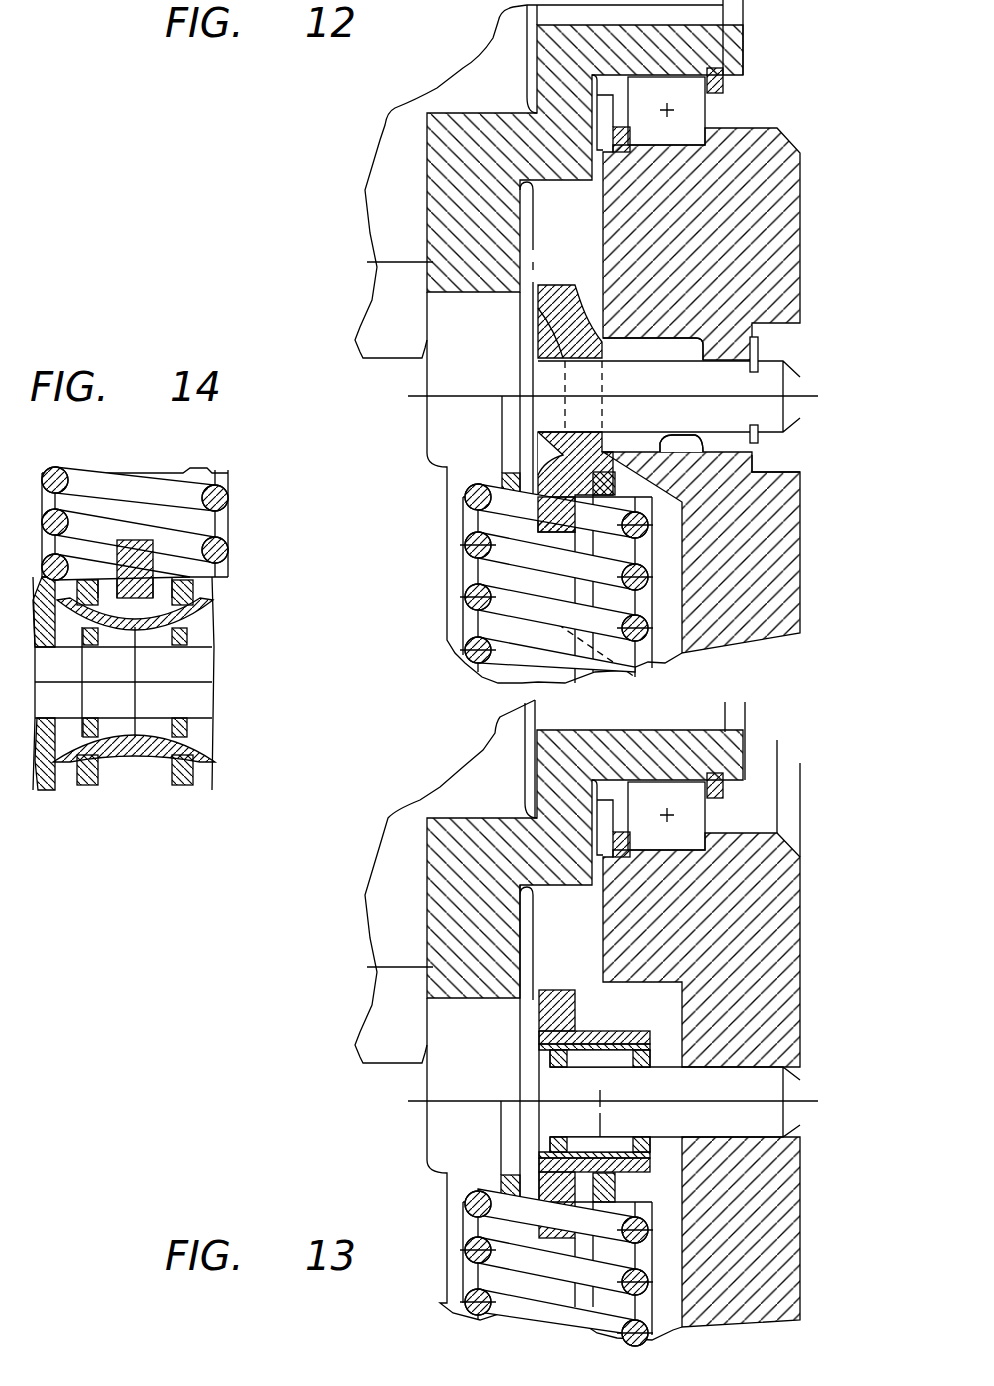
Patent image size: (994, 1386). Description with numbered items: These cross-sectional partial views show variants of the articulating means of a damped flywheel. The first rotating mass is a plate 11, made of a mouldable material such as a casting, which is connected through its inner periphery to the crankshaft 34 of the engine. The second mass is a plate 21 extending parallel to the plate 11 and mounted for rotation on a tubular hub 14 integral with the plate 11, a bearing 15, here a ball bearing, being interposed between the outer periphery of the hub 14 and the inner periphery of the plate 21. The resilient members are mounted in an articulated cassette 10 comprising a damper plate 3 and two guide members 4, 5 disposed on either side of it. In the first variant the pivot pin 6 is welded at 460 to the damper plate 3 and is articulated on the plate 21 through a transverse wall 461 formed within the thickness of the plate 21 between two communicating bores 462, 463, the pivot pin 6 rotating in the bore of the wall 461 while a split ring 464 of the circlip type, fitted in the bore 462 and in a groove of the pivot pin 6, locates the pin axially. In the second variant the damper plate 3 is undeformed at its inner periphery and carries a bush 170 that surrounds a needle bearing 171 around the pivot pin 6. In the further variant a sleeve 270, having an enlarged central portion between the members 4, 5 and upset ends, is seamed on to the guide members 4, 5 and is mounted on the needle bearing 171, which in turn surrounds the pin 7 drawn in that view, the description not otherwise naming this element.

In FIG. 12, the damper plate 3 is at (533, 230).
In FIG. 13, the damper plate 3 is at (556, 1096).
In FIG. 14, the guide member 4 is at (85, 777).
In FIG. 14, the guide member 5 is at (187, 785).
In FIG. 12, the pivot pin 6 is at (793, 408).
In FIG. 13, the pivot pin 6 is at (763, 1088).
In FIG. 14, the shaft 7 is at (187, 703).
In FIG. 12, the articulated cassette 10 is at (657, 605).
In FIG. 13, the articulated cassette 10 is at (655, 1253).
In FIG. 14, the articulated cassette 10 is at (127, 497).
In FIG. 12, the plate 11 is at (425, 135).
In FIG. 13, the plate 11 is at (585, 864).
In FIG. 12, the tubular hub 14 is at (745, 60).
In FIG. 13, the tubular hub 14 is at (727, 758).
In FIG. 12, the bearing 15 is at (695, 113).
In FIG. 13, the bearing 15 is at (695, 815).
In FIG. 12, the plate 21 is at (782, 273).
In FIG. 13, the plate 21 is at (790, 957).
In FIG. 12, the crankshaft 34 is at (378, 170).
In FIG. 13, the crankshaft 34 is at (383, 1058).
In FIG. 13, the bush 170 is at (540, 1043).
In FIG. 13, the needle bearing 171 is at (600, 1058).
In FIG. 14, the needle bearing 171 is at (152, 638).
In FIG. 14, the sleeve 270 is at (137, 757).
In FIG. 12, the weld 460 is at (548, 358).
In FIG. 12, the transverse wall 461 is at (753, 450).
In FIG. 12, the bore 462 is at (800, 465).
In FIG. 12, the bore 463 is at (637, 348).
In FIG. 12, the split ring 464 is at (758, 352).